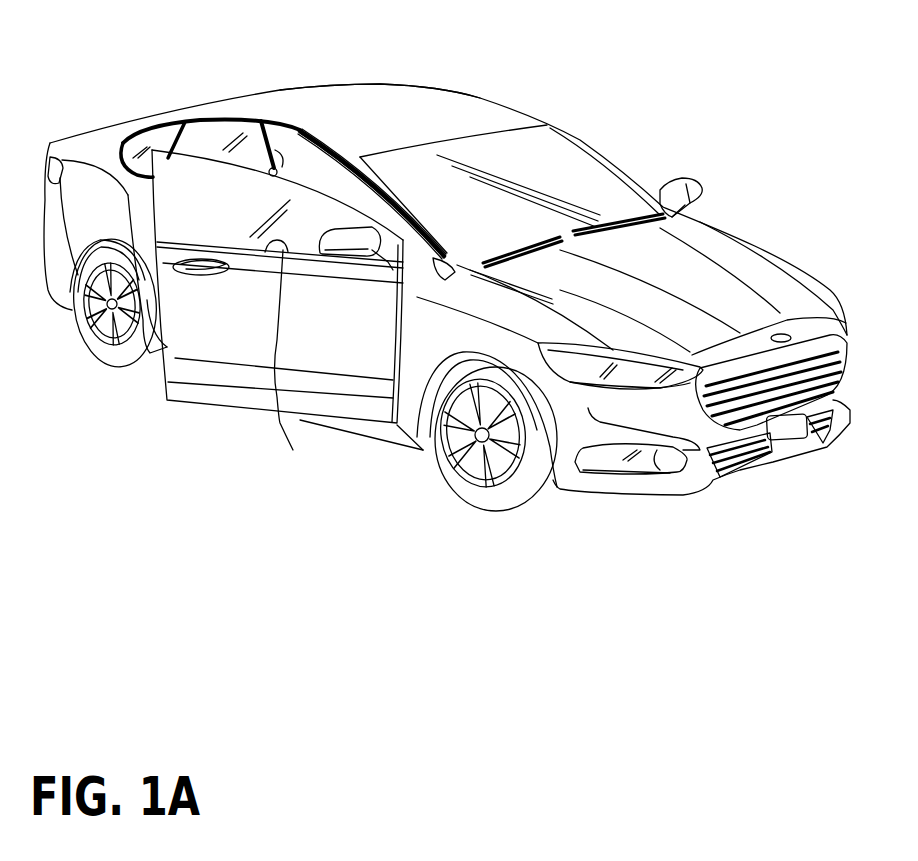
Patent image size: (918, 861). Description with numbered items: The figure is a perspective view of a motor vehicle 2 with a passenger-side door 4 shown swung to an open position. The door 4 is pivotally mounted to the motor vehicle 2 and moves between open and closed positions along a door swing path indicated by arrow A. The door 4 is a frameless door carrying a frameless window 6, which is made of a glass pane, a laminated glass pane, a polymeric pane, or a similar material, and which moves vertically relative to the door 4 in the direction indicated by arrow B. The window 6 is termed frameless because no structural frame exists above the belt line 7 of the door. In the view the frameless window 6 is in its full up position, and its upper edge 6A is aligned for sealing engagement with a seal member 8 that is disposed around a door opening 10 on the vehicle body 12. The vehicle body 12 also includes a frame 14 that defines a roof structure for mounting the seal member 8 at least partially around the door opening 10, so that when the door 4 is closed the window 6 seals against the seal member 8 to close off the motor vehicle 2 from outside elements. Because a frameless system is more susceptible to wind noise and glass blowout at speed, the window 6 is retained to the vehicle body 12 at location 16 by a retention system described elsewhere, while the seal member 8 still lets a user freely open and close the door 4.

The motor vehicle 2 is at (524, 77).
The door 4 is at (227, 343).
The frameless window 6 is at (240, 180).
The upper edge 6A is at (177, 137).
The belt line 7 is at (288, 363).
The seal member 8 is at (303, 137).
The door opening 10 is at (240, 128).
The vehicle body 12 is at (433, 88).
The frame 14 is at (310, 135).
The location 16 is at (343, 157).
The arrow A is at (137, 380).
The arrow B is at (180, 172).